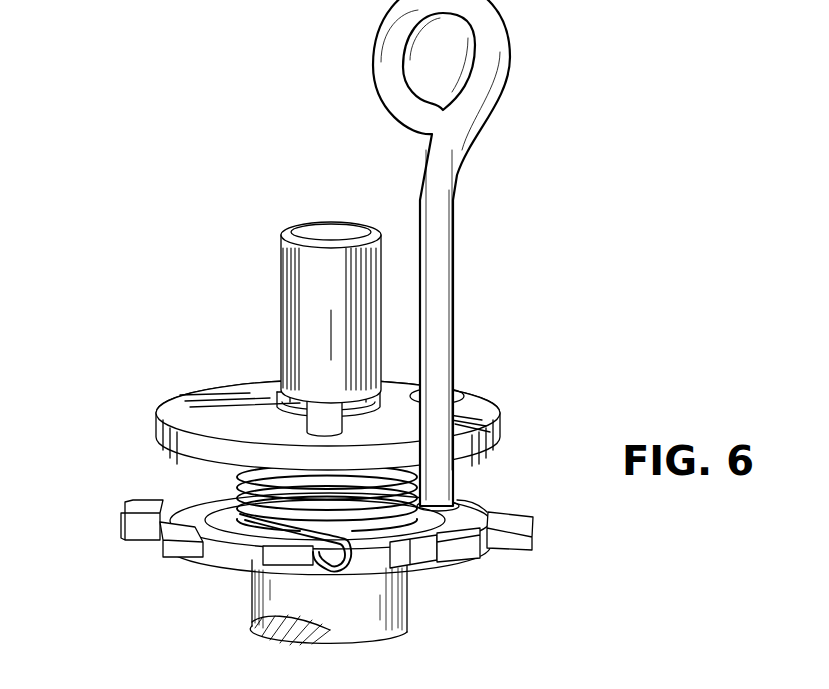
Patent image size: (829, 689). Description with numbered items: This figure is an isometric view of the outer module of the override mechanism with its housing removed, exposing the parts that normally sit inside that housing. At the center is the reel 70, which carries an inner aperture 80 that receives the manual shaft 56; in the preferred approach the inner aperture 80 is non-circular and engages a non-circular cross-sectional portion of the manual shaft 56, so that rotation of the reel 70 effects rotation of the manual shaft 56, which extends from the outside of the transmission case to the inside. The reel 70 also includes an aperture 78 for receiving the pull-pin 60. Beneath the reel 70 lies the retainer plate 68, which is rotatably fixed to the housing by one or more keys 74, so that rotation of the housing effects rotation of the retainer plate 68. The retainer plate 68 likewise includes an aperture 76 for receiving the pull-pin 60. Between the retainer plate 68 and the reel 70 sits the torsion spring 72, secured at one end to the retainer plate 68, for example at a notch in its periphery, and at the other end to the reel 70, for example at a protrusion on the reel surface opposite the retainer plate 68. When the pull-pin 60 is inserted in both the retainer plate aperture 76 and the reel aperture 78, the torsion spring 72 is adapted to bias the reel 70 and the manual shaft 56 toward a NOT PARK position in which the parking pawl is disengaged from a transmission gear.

The pull-pin 60 is at (490, 108).
The manual shaft 56 is at (283, 277).
The inner aperture 80 is at (282, 393).
The aperture 78 is at (460, 390).
The reel 70 is at (157, 428).
The torsion spring 72 is at (240, 481).
The aperture 76 is at (460, 500).
The key 74 is at (121, 520).
The retainer plate 68 is at (222, 567).